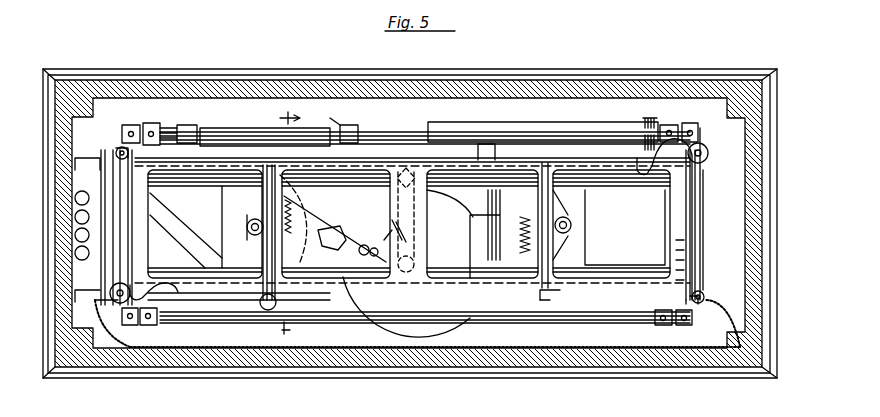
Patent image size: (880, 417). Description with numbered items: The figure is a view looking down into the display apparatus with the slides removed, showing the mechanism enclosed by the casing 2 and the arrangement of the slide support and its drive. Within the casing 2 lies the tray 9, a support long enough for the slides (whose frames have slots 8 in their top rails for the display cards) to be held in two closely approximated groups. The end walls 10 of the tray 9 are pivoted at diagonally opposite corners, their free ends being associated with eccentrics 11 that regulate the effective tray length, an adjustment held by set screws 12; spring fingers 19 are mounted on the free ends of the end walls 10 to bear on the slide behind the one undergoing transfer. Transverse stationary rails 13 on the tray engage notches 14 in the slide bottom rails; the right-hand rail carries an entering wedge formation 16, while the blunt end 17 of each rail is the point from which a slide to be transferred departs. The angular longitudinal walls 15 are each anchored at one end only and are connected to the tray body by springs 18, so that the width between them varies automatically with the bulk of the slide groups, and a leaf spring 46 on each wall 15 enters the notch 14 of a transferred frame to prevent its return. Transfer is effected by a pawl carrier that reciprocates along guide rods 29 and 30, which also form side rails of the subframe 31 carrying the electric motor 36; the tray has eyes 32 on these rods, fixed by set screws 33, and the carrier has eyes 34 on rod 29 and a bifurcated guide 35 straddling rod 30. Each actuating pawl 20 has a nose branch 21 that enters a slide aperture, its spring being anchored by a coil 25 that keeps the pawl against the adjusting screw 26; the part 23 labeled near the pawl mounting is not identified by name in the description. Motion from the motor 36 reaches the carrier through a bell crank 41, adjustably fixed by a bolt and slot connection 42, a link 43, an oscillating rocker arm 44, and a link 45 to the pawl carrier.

The casing 2 is at (62, 84).
The slots 8 is at (375, 245).
The tray 9 is at (412, 234).
The end walls 10 is at (128, 173).
The eccentrics 11 is at (712, 158).
The set screws 12 is at (120, 305).
The stationary rails 13 is at (270, 206).
The notches 14 is at (288, 216).
The longitudinal walls 15 is at (380, 159).
The entering wedge formation 16 is at (322, 138).
The blunt end 17 is at (548, 165).
The spring 18 is at (520, 238).
The spring fingers 19 is at (660, 171).
The actuating pawl 20 is at (192, 152).
The branch 21 is at (170, 166).
The hinge 23 is at (414, 300).
The coil 25 is at (168, 130).
The screw 26 is at (203, 133).
The guide rod 29 is at (250, 132).
The guide rod 30 is at (330, 272).
The subframe 31 is at (704, 222).
The eyes 32 is at (148, 326).
The set screws 33 is at (152, 134).
The eyes 34 is at (190, 126).
The bifurcated guide 35 is at (385, 270).
The electric motor 36 is at (657, 232).
The bell crank 41 is at (368, 232).
The bolt and slot connection 42 is at (408, 220).
The link 43 is at (336, 224).
The rocker arm 44 is at (190, 240).
The link 45 is at (186, 225).
The leaf spring 46 is at (347, 130).